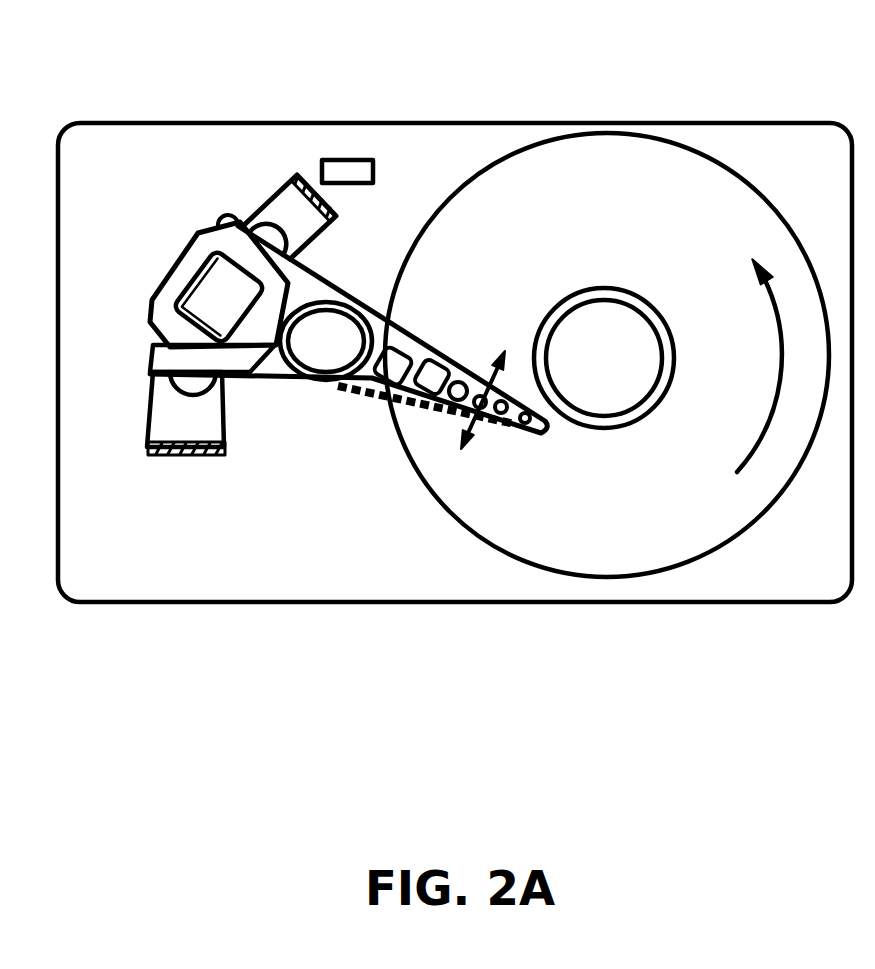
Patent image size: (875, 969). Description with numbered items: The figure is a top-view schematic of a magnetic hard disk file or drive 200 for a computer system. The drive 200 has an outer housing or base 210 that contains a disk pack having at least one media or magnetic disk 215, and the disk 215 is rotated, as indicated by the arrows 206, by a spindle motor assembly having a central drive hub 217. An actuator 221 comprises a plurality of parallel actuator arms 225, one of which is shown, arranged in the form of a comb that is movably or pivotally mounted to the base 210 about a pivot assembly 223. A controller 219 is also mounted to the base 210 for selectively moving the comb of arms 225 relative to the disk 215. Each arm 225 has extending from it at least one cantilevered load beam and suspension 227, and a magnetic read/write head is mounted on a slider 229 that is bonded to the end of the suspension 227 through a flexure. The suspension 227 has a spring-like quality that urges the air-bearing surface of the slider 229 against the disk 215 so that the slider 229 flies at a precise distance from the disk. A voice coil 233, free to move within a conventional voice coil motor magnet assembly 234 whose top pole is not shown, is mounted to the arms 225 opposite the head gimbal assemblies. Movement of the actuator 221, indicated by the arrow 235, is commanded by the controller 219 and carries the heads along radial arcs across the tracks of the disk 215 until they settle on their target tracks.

The magnetic hard disk drive 200 is at (476, 30).
The arrows 206 is at (782, 367).
The outer housing or base 210 is at (492, 603).
The magnetic disk 215 is at (734, 537).
The central drive hub 217 is at (636, 292).
The controller 219 is at (373, 172).
The actuator 221 is at (237, 478).
The pivot assembly 223 is at (305, 390).
The actuator arm 225 is at (388, 340).
The cantilevered load beam and suspension 227 is at (457, 362).
The slider 229 is at (500, 427).
The voice coil 233 is at (178, 243).
The voice coil motor magnet assembly 234 is at (276, 200).
The arrow 235 is at (504, 352).